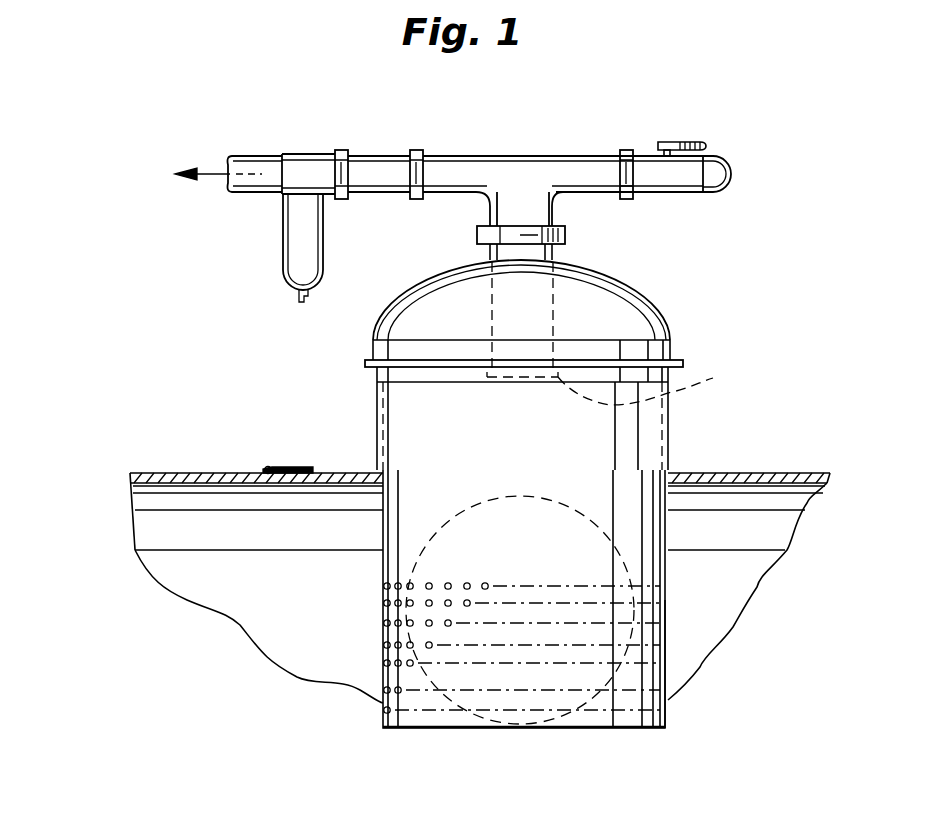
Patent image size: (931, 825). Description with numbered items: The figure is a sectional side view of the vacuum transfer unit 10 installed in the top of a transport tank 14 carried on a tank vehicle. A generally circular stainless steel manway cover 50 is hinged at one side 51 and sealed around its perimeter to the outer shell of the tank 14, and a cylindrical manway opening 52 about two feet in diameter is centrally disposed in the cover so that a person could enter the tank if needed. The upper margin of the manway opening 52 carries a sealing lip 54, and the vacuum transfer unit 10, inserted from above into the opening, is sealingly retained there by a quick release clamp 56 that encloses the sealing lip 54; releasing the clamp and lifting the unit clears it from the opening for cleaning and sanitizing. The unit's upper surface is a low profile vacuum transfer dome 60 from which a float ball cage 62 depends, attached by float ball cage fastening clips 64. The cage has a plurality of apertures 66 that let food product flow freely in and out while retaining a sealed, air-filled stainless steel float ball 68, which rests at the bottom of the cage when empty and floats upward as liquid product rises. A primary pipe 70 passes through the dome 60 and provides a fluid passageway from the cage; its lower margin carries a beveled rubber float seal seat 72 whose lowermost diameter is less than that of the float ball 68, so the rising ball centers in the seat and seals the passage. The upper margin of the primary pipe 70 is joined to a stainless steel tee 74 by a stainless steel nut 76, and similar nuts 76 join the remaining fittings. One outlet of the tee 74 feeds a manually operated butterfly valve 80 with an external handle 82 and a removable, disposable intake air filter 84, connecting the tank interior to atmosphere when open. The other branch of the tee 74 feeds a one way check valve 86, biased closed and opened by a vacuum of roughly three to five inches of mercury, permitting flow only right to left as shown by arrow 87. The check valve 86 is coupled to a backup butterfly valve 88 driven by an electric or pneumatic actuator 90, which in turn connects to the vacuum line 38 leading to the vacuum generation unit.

The vacuum transfer unit 10 is at (188, 98).
The transport tank 14 is at (163, 475).
The vacuum lines 38 is at (252, 193).
The manway cover 50 is at (348, 470).
The hinged side 51 is at (260, 470).
The manway opening 52 is at (376, 422).
The sealing lip 54 is at (368, 360).
The quick release clamp 56 is at (672, 360).
The vacuum transfer dome 60 is at (635, 283).
The float ball cage 62 is at (667, 677).
The float ball cage fastening clips 64 is at (375, 383).
The apertures 66 is at (383, 586).
The float ball 68 is at (657, 637).
The primary pipe 70 is at (553, 257).
The float seal seat 72 is at (618, 333).
The tee 74 is at (492, 153).
The nut 76 is at (341, 148).
The butterfly valve 80 is at (650, 150).
The external handle 82 is at (700, 141).
The intake air filter 84 is at (727, 167).
The check valve 86 is at (372, 153).
The arrow 87 is at (207, 172).
The backup butterfly valve 88 is at (310, 152).
The actuator 90 is at (256, 247).